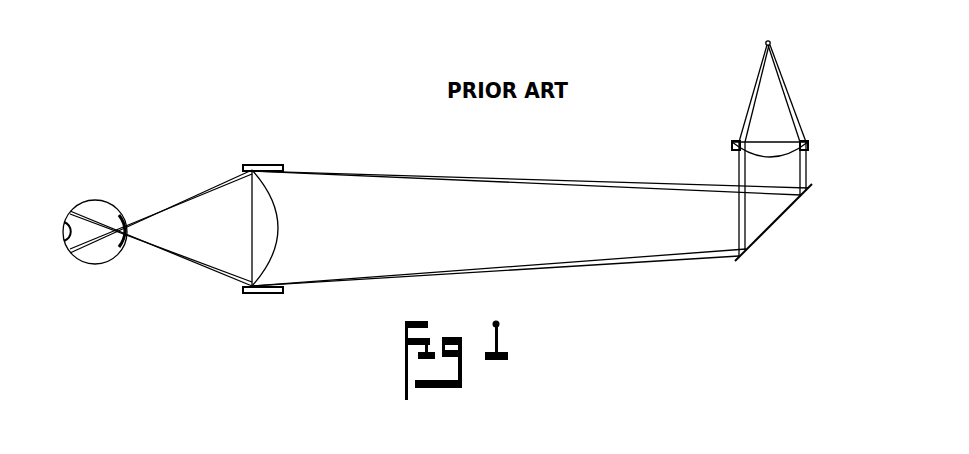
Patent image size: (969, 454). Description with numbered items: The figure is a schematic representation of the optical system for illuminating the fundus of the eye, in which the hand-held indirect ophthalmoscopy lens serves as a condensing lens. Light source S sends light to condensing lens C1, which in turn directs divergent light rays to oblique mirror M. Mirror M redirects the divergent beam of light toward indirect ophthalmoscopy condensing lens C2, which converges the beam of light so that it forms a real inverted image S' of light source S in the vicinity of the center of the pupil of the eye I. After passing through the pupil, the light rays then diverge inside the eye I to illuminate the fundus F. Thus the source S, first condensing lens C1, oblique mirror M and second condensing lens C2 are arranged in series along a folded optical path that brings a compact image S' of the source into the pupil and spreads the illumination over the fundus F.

The eye I is at (106, 202).
The fundus F is at (67, 247).
The real inverted image of light source S' is at (119, 266).
The indirect ophthalmoscopy condensing lens C2 is at (282, 209).
The light source S is at (776, 72).
The condensing lens C1 is at (768, 140).
The oblique mirror M is at (778, 222).